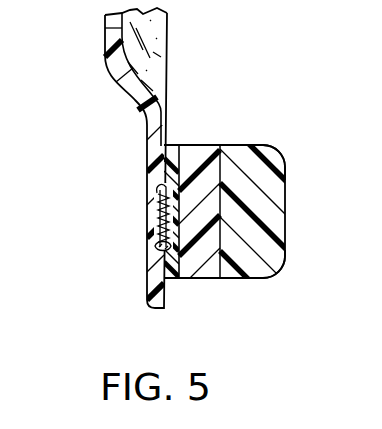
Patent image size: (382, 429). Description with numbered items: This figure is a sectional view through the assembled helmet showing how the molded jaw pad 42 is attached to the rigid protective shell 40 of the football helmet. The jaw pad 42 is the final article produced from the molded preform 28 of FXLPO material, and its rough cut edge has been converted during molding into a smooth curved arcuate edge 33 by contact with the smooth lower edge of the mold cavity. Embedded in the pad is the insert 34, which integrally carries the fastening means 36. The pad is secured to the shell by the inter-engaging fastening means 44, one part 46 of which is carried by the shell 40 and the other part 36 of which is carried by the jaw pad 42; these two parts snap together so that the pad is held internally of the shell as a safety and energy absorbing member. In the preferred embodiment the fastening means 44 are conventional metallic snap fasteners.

The rigid protective shell 40 is at (113, 77).
The insert 34 is at (176, 145).
The smooth curved arcuate edge 33 is at (279, 150).
The preform 28 is at (270, 222).
The inter-engaging fastening means 44 is at (141, 217).
The fastening means part carried by the shell 46 is at (150, 252).
The fastening means 36 is at (170, 282).
The jaw pad 42 is at (262, 298).